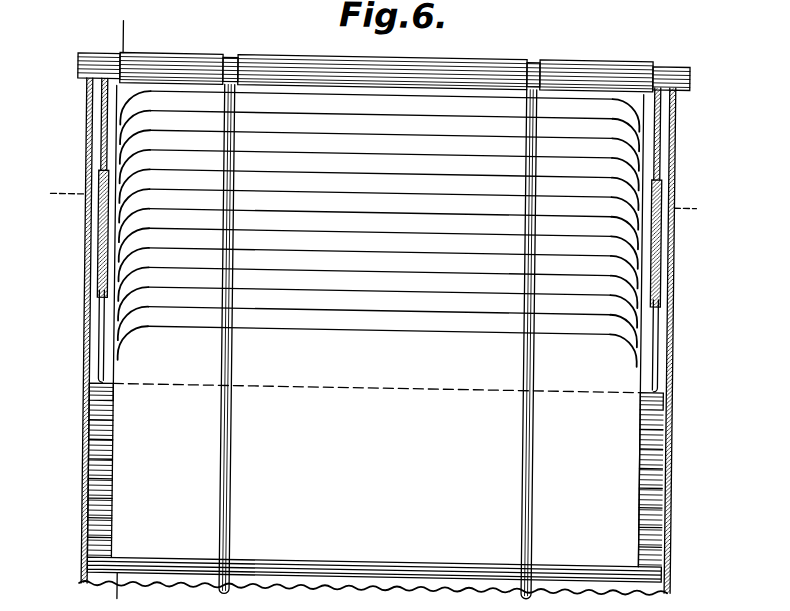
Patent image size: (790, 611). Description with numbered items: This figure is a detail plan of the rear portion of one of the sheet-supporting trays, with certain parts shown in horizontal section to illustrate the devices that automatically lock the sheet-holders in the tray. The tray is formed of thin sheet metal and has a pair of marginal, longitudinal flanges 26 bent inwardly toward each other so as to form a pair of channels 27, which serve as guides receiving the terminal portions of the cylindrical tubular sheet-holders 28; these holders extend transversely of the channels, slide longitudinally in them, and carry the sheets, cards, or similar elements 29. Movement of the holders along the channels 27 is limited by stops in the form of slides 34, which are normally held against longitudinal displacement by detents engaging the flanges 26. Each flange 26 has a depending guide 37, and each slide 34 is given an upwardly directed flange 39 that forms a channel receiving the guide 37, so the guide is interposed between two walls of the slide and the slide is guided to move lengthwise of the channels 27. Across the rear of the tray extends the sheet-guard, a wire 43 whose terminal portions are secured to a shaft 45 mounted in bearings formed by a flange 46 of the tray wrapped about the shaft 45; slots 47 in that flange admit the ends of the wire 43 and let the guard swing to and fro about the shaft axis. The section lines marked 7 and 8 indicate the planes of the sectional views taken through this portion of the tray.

The section line 7- 7 is at (374, 200).
The section line 8- 8 is at (120, 305).
The marginal longitudinal flange 26 is at (92, 281).
The channel 27 is at (98, 308).
The cylindrical tubular sheet-holder 28 is at (112, 506).
The sheet 29 is at (141, 416).
The slide 34 is at (109, 232).
The depending guide 37 is at (106, 140).
The upwardly directed flange 39 is at (105, 254).
The wire 43 is at (236, 410).
The shaft 45 is at (78, 65).
The flange 46 is at (379, 58).
The slot 47 is at (230, 56).